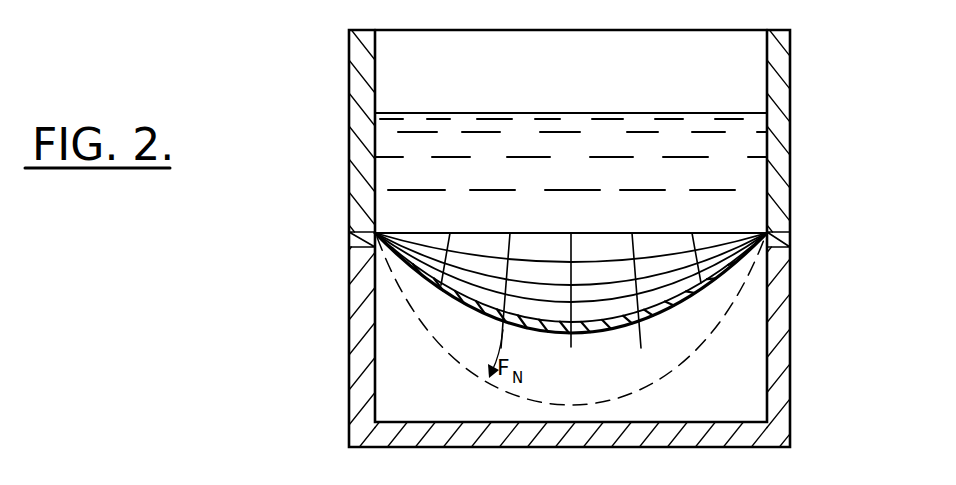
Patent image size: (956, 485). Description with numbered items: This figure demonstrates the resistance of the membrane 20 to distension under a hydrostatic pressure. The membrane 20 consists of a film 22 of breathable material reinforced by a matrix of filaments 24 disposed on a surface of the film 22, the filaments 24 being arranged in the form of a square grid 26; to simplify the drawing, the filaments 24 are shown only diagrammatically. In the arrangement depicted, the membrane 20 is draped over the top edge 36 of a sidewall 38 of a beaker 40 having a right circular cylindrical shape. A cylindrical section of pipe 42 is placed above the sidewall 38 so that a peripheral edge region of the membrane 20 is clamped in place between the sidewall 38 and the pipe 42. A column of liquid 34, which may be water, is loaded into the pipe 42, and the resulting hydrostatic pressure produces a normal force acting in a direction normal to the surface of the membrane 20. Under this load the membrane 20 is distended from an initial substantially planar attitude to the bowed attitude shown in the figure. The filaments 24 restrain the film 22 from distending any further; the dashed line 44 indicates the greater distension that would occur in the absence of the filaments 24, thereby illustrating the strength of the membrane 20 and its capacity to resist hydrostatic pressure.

The membrane 20 is at (617, 333).
The film 22 is at (582, 336).
The filaments 24 is at (629, 252).
The square grid 26 is at (667, 484).
The liquid 34 is at (613, 112).
The top edge 36 is at (789, 236).
The sidewall 38 is at (791, 327).
The beaker 40 is at (797, 413).
The pipe 42 is at (792, 90).
The dashed line 44 is at (645, 397).